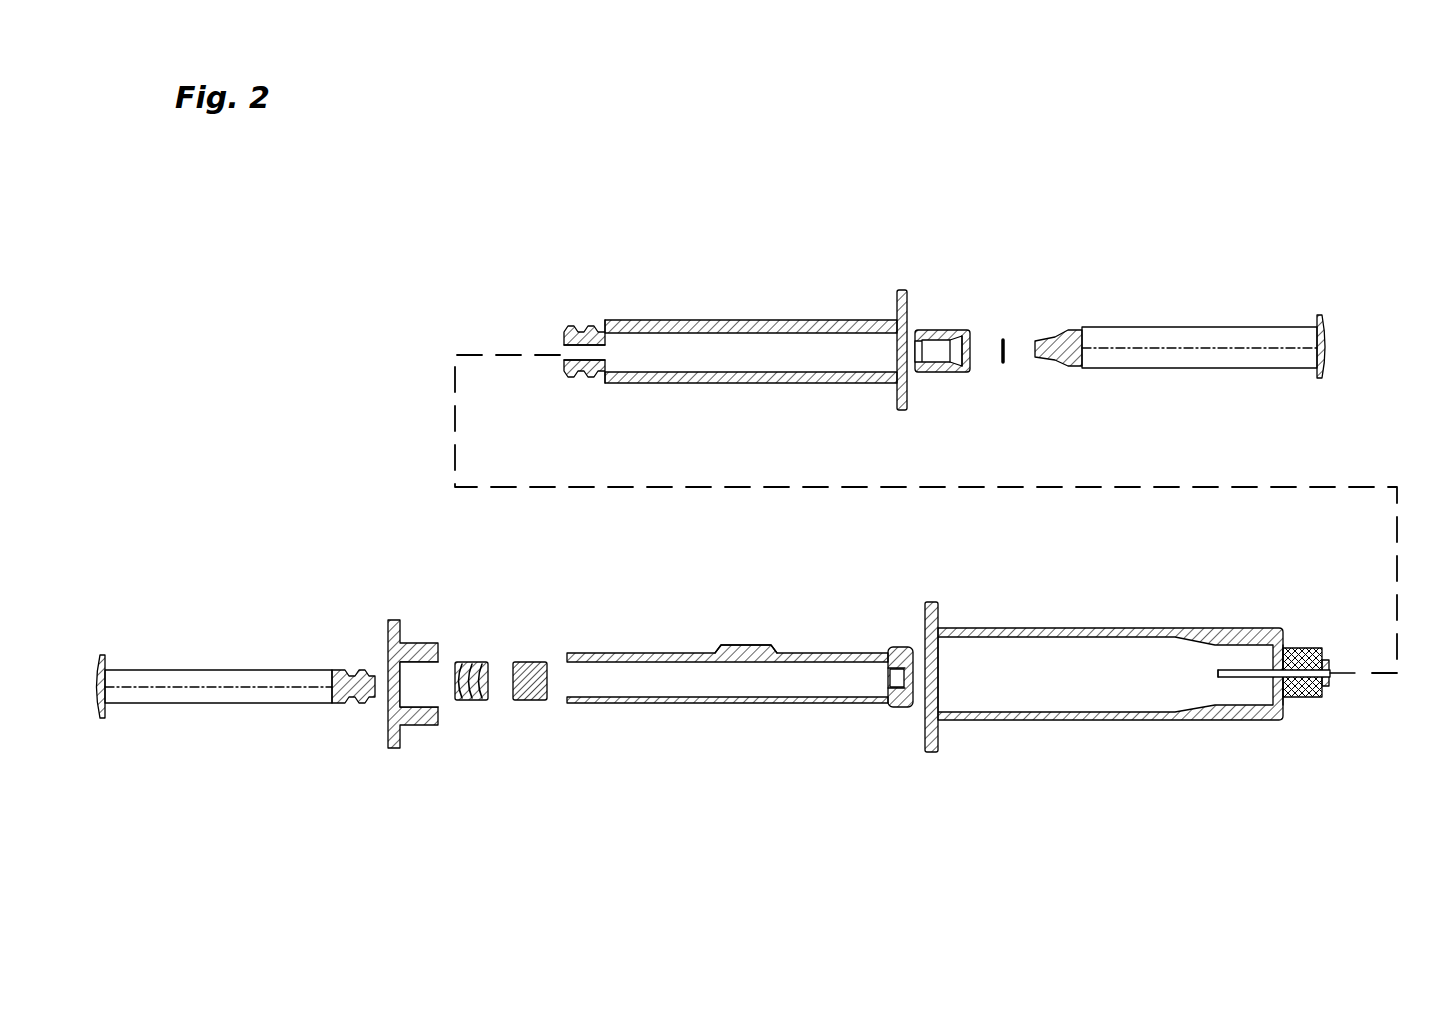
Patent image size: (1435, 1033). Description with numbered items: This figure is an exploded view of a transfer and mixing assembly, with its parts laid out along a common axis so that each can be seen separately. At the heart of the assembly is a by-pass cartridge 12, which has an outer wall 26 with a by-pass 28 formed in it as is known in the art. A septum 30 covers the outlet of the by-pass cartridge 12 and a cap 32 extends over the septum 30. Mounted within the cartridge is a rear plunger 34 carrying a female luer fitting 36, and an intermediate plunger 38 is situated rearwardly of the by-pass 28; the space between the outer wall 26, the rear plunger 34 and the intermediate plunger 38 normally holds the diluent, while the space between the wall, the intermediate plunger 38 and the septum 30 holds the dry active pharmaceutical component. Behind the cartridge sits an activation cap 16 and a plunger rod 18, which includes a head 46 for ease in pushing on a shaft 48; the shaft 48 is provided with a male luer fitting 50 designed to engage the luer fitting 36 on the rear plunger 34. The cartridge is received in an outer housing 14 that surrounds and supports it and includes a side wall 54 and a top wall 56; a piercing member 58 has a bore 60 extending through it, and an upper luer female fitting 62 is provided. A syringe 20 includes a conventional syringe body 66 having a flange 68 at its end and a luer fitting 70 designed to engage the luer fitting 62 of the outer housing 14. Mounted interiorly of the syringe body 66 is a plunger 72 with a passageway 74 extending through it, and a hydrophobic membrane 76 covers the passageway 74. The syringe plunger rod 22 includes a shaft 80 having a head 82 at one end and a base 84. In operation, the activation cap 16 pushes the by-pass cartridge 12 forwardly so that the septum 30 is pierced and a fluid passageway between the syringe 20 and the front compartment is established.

The by-pass cartridge 12 is at (727, 610).
The outer housing 14 is at (1092, 596).
The activation cap 16 is at (415, 618).
The plunger rod 18 is at (230, 622).
The syringe 20 is at (778, 283).
The syringe plunger rod 22 is at (1182, 292).
The outer wall 26 is at (678, 703).
The by-pass 28 is at (753, 668).
The septum 30 is at (880, 700).
The cap 32 is at (913, 707).
The rear plunger 34 is at (478, 660).
The female luer fitting 36 is at (440, 707).
The intermediate plunger 38 is at (545, 660).
The head 46 is at (97, 662).
The shaft 48 is at (210, 690).
The male luer fitting 50 is at (362, 703).
The side wall 54 is at (995, 720).
The top wall 56 is at (1285, 718).
The piercing member 58 is at (1248, 668).
The bore 60 is at (1218, 673).
The upper luer female fitting 62 is at (1305, 652).
The syringe body 66 is at (672, 320).
The flange 68 is at (905, 295).
The luer fitting 70 is at (575, 320).
The plunger 72 is at (940, 373).
The passageway 74 is at (985, 352).
The hydrophobic membrane 76 is at (1016, 320).
The shaft 80 is at (1195, 348).
The head 82 is at (1328, 348).
The base 84 is at (1060, 362).